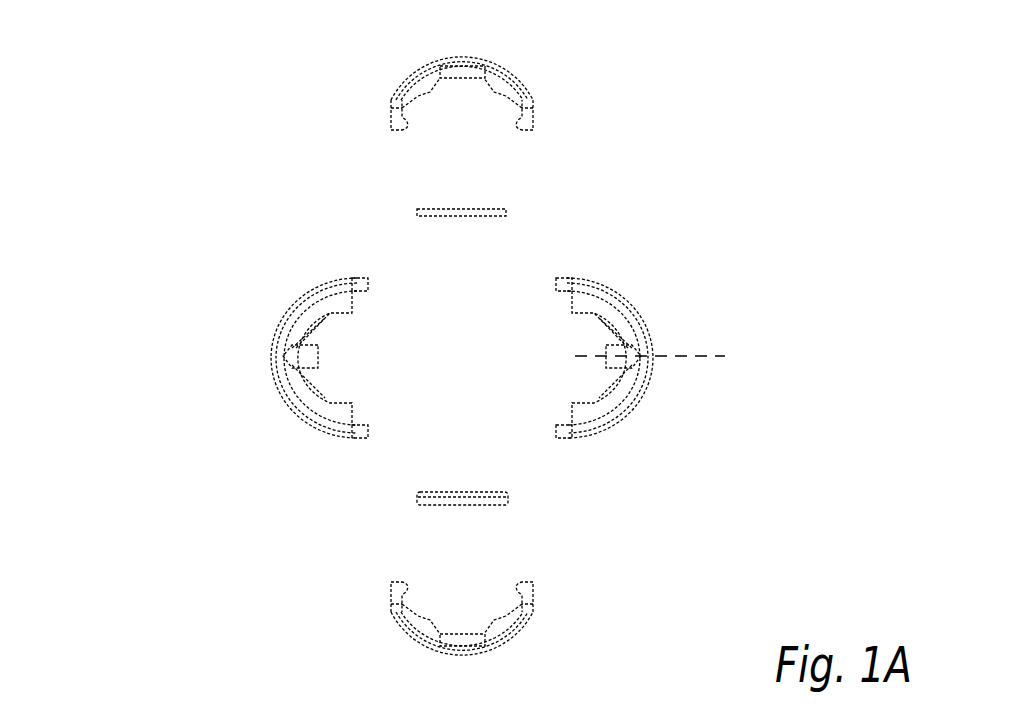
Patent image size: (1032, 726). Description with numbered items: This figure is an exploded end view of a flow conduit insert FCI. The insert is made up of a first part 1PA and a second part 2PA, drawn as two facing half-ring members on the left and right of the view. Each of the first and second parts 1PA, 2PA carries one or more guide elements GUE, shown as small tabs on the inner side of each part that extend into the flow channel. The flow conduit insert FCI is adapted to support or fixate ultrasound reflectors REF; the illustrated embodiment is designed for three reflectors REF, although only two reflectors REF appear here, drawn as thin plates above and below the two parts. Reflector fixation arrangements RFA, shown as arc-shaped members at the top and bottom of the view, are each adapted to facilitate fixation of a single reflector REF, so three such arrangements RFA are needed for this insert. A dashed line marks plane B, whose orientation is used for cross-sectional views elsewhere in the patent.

The flow conduit insert FCI is at (183, 131).
The reflector fixation arrangement RFA is at (445, 62).
The ultrasound reflector REF is at (468, 209).
The first part 1PA is at (296, 300).
The second part 2PA is at (622, 298).
The guide element GUE is at (310, 357).
The plane B is at (702, 358).